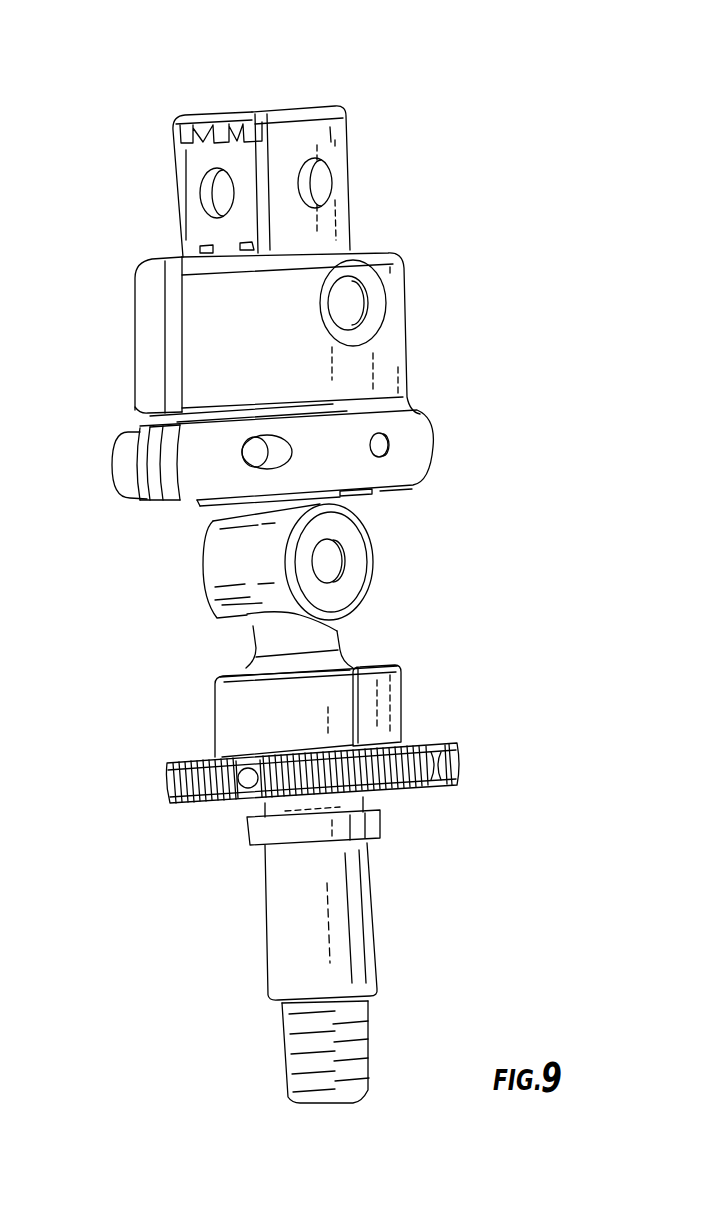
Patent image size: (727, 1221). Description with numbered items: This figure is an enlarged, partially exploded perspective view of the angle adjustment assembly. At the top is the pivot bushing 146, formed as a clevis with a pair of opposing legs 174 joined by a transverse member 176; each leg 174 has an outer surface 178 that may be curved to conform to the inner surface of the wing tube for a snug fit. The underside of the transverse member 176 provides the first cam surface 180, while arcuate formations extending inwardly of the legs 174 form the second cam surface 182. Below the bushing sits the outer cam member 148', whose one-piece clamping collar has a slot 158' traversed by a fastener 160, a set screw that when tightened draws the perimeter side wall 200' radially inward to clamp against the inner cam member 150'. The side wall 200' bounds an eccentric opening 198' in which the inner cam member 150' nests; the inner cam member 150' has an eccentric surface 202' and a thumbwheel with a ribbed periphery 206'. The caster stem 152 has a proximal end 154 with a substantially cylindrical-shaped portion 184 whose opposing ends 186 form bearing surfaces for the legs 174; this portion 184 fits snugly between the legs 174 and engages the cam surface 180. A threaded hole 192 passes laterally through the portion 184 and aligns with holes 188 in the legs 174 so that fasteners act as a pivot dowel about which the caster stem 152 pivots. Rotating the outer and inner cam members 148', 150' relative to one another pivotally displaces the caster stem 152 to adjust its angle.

The pivot bushing 146 is at (345, 553).
The outer cam member 148' is at (319, 306).
The inner cam member 150' is at (399, 739).
The caster stem 152 is at (219, 950).
The proximal end 154 is at (320, 593).
The slot 158' is at (126, 496).
The fastener 160 is at (102, 443).
The opposing legs 174 is at (267, 151).
The transverse member 176 is at (308, 149).
The outer surface 178 is at (374, 111).
The first cam surface 180 is at (139, 195).
The second cam surface 182 is at (167, 240).
The substantially cylindrical-shaped portion 184 is at (259, 644).
The opposing ends 186 is at (230, 564).
The holes 188 is at (327, 198).
The threaded hole 192 is at (392, 588).
The eccentric opening 198' is at (339, 512).
The side wall 200' is at (436, 470).
The eccentric surface 202' is at (429, 705).
The ribbed periphery 206' is at (363, 778).